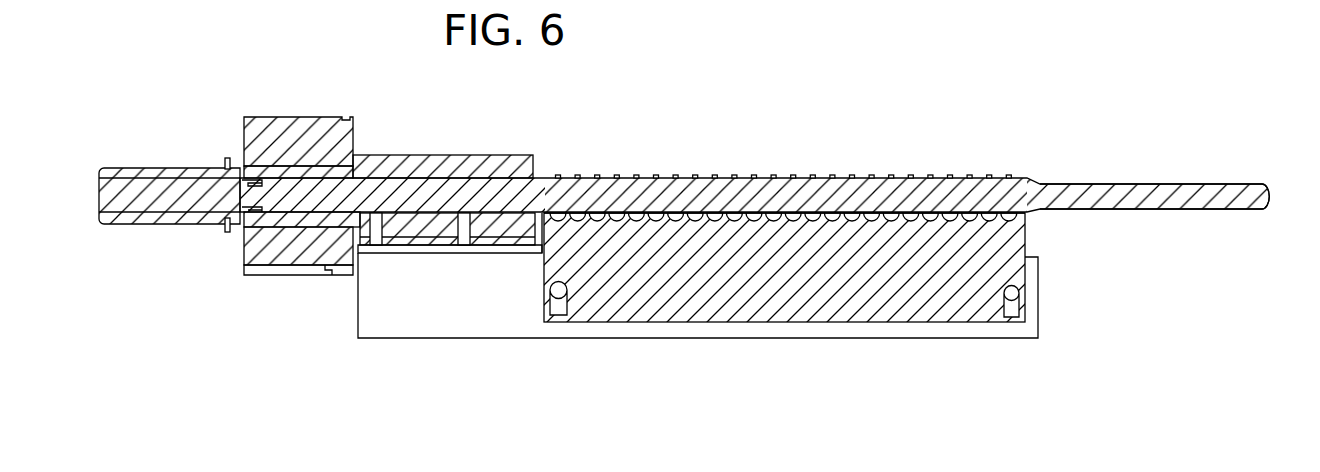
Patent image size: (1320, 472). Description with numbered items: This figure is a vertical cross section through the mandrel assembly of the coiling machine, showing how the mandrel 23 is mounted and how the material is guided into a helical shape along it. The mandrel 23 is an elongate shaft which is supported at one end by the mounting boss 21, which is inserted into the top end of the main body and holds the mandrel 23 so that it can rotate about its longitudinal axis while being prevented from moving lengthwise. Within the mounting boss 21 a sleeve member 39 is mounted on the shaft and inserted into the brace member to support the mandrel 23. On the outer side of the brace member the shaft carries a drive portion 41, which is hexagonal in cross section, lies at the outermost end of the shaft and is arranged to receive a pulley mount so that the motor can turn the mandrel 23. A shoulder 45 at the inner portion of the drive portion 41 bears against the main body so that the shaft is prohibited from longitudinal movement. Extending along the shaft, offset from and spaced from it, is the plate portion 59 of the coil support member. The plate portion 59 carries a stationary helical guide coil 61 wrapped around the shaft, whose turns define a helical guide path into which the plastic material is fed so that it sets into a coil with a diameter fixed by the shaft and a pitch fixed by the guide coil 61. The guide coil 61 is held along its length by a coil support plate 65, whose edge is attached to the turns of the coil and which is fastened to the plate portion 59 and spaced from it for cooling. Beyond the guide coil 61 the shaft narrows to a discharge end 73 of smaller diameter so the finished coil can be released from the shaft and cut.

The mounting boss 21 is at (327, 118).
The mandrel 23 is at (637, 156).
The sleeve member 39 is at (515, 155).
The drive portion 41 is at (150, 227).
The shoulder 45 is at (227, 158).
The plate portion 59 is at (682, 337).
The stationary helical guide coil 61 is at (803, 177).
The coil support plate 65 is at (788, 292).
The discharge end 73 is at (1105, 200).